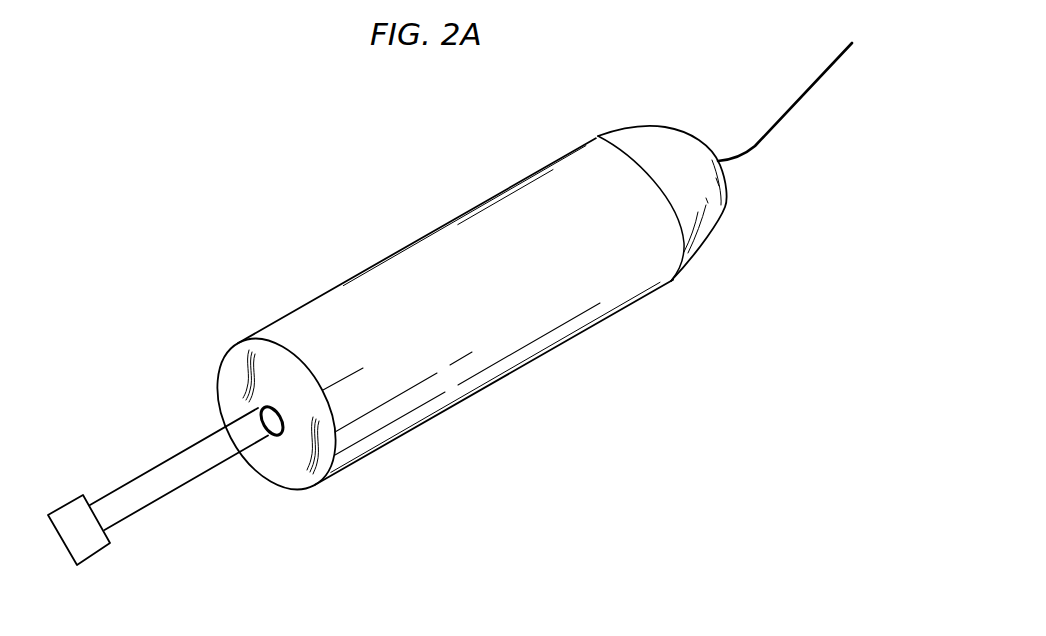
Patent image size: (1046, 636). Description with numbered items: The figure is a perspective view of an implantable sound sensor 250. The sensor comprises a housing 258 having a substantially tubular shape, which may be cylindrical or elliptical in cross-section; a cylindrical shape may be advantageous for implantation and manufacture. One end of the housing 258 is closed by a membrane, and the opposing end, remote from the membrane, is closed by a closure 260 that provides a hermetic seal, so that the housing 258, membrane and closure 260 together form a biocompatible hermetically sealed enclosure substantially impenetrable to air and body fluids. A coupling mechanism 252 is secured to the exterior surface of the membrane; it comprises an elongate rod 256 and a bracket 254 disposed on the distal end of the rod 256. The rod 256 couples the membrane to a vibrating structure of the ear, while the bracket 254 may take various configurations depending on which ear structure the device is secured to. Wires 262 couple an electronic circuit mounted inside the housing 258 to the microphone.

The implantable sound sensor 250 is at (266, 220).
The coupling mechanism 252 is at (157, 420).
The bracket 254 is at (85, 496).
The rod 256 is at (187, 468).
The housing 258 is at (520, 333).
The closure 260 is at (702, 207).
The wires 262 is at (793, 105).